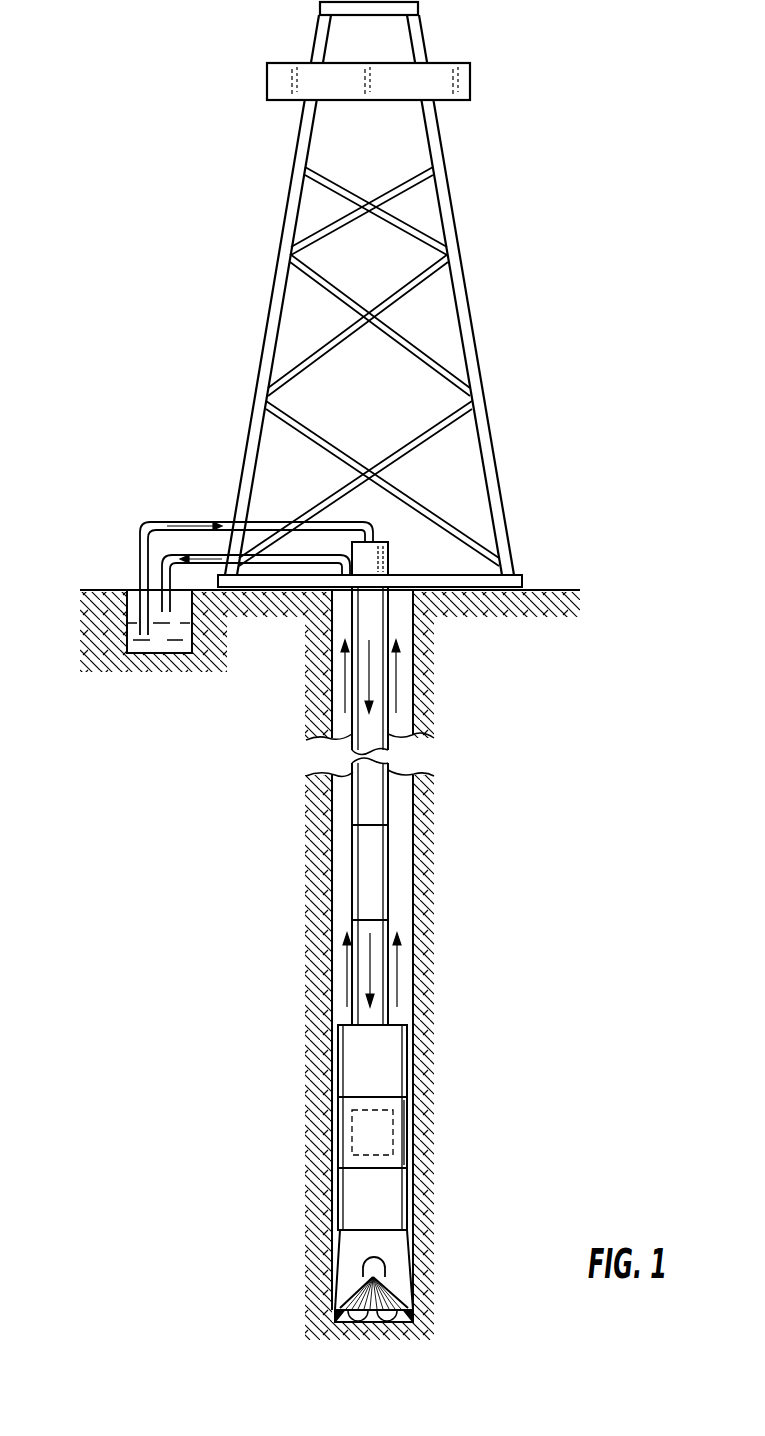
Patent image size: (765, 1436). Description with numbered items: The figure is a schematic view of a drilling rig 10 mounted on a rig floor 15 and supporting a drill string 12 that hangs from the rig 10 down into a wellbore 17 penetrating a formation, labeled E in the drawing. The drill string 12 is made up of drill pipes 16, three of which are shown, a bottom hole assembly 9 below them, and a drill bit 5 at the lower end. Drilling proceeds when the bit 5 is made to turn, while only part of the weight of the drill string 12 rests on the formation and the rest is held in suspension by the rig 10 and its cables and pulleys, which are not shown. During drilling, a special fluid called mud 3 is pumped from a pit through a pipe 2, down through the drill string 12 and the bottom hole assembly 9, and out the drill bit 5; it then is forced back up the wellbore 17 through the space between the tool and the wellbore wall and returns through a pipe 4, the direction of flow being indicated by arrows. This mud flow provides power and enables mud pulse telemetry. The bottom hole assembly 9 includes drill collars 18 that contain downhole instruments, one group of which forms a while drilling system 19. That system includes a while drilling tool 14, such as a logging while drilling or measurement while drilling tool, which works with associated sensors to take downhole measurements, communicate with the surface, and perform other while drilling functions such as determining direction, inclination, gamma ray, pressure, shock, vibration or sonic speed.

The pipe 2 is at (166, 520).
The mud 3 is at (152, 645).
The pipe 4 is at (302, 564).
The drill bit 5 is at (400, 1252).
The bottom hole assembly 9 is at (237, 1238).
The drilling rig 10 is at (452, 202).
The drill string 12 is at (390, 727).
The WD tool 14 is at (395, 1130).
The rig floor 15 is at (522, 580).
The drill pipes 16 is at (353, 818).
The wellbore 17 is at (419, 633).
The drill collars 18 is at (340, 1088).
The WD system 19 is at (405, 1155).
The earth formation E is at (497, 871).